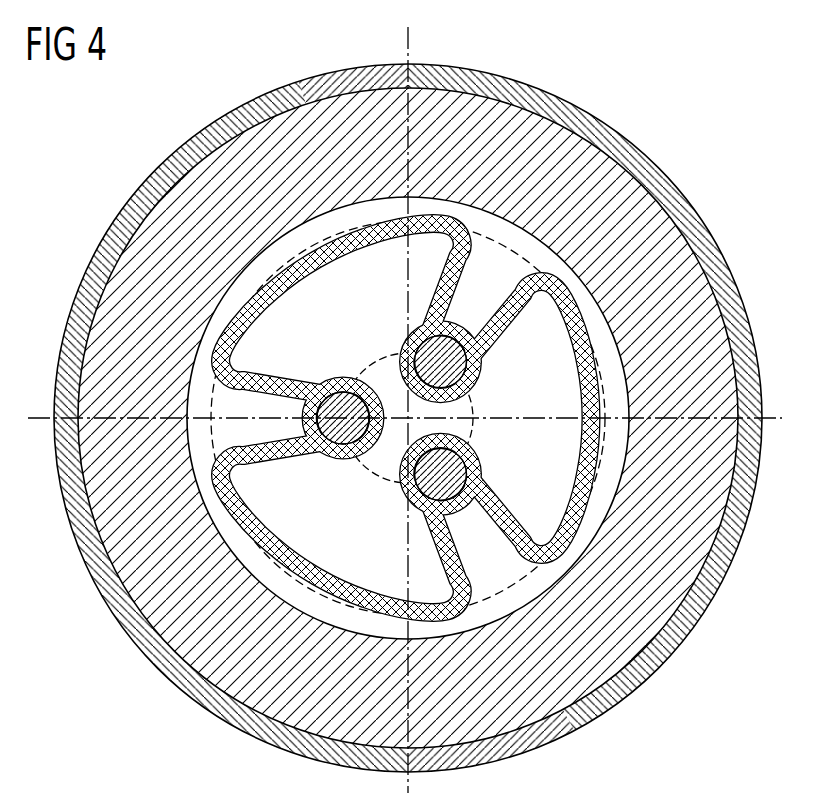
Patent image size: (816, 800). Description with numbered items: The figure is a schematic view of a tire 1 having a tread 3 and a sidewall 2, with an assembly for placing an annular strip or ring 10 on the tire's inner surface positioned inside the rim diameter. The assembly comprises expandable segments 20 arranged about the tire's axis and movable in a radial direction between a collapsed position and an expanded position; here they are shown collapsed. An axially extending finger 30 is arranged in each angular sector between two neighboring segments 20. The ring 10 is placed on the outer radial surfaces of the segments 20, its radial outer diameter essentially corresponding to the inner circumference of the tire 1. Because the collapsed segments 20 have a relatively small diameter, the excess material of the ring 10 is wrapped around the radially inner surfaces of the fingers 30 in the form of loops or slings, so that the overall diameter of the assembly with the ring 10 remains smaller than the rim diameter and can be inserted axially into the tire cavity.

The tire 1 is at (405, 410).
The sidewall 2 is at (553, 132).
The tread 3 is at (662, 177).
The annular strip or ring 10 is at (592, 322).
The expandable segments 20 is at (327, 268).
The axially extending fingers 30 is at (322, 398).